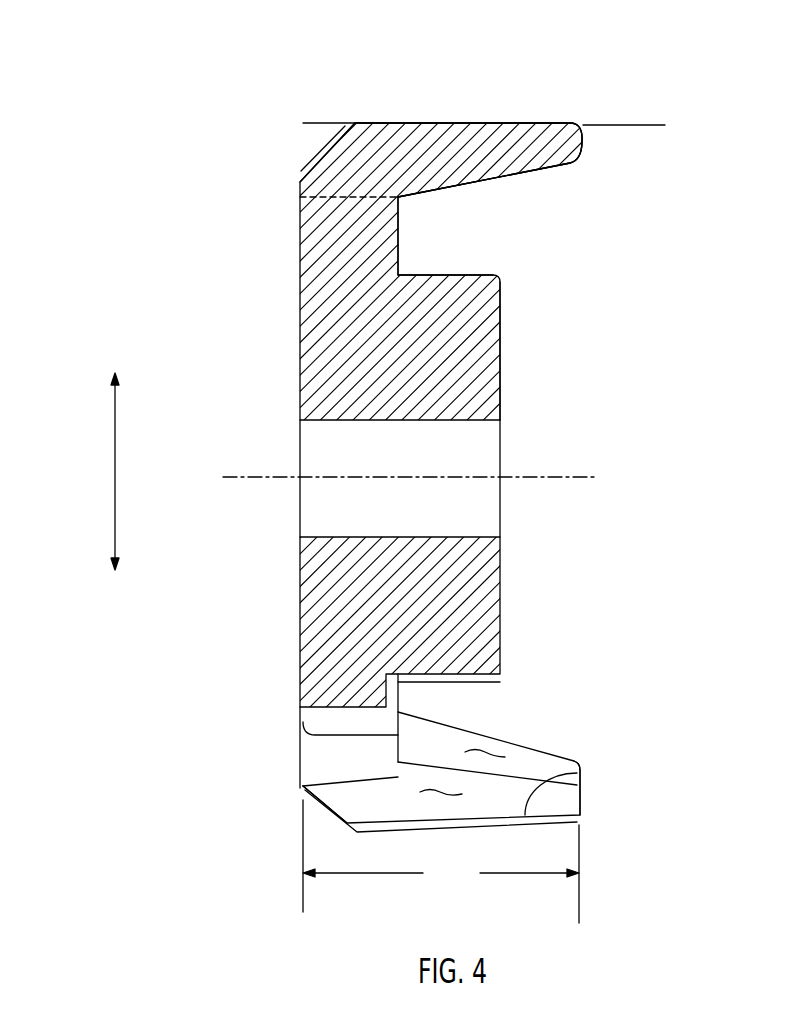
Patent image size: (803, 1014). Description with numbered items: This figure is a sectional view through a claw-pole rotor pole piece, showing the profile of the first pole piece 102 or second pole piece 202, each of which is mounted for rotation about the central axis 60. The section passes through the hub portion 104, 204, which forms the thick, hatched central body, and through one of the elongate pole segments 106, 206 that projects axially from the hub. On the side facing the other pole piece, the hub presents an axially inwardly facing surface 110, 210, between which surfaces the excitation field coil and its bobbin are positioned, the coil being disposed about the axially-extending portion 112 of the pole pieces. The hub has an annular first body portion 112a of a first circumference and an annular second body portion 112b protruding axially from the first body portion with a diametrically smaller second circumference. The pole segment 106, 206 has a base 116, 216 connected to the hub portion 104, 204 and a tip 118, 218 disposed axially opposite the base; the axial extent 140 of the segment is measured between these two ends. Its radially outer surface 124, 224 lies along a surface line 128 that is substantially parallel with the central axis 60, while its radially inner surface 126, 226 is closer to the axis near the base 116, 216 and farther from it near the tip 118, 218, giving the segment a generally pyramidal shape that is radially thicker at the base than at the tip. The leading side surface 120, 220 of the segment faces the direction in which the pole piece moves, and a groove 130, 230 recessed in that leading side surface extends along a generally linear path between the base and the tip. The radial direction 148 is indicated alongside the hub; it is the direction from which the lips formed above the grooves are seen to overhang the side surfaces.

The central axis 60 is at (245, 477).
The first pole piece 102 is at (327, 432).
The second pole piece 202 is at (145, 133).
The hub portion 104 is at (401, 507).
The hub portion 204 is at (306, 296).
The first pole segment 106 is at (538, 448).
The second pole segment 206 is at (468, 100).
The axially inwardly facing surface 110 is at (482, 236).
The axially inwardly facing surface 210 is at (398, 250).
The axially-extending portion 112 is at (500, 320).
The first body portion 112a is at (314, 400).
The second body portion 112b is at (469, 352).
The base 116 is at (254, 479).
The base 216 is at (323, 152).
The tip 118 is at (656, 469).
The tip 218 is at (582, 140).
The leading side surface 120 is at (520, 714).
The leading side surface 220 is at (437, 790).
The radially outer surface 124 is at (456, 73).
The radially outer surface 224 is at (405, 122).
The radially inner surface 126 is at (532, 460).
The radially inner surface 226 is at (548, 170).
The surface line 128 is at (648, 124).
The groove 130 is at (621, 766).
The groove 230 is at (582, 762).
The axial extent 140 is at (441, 861).
The radial direction 148 is at (115, 512).